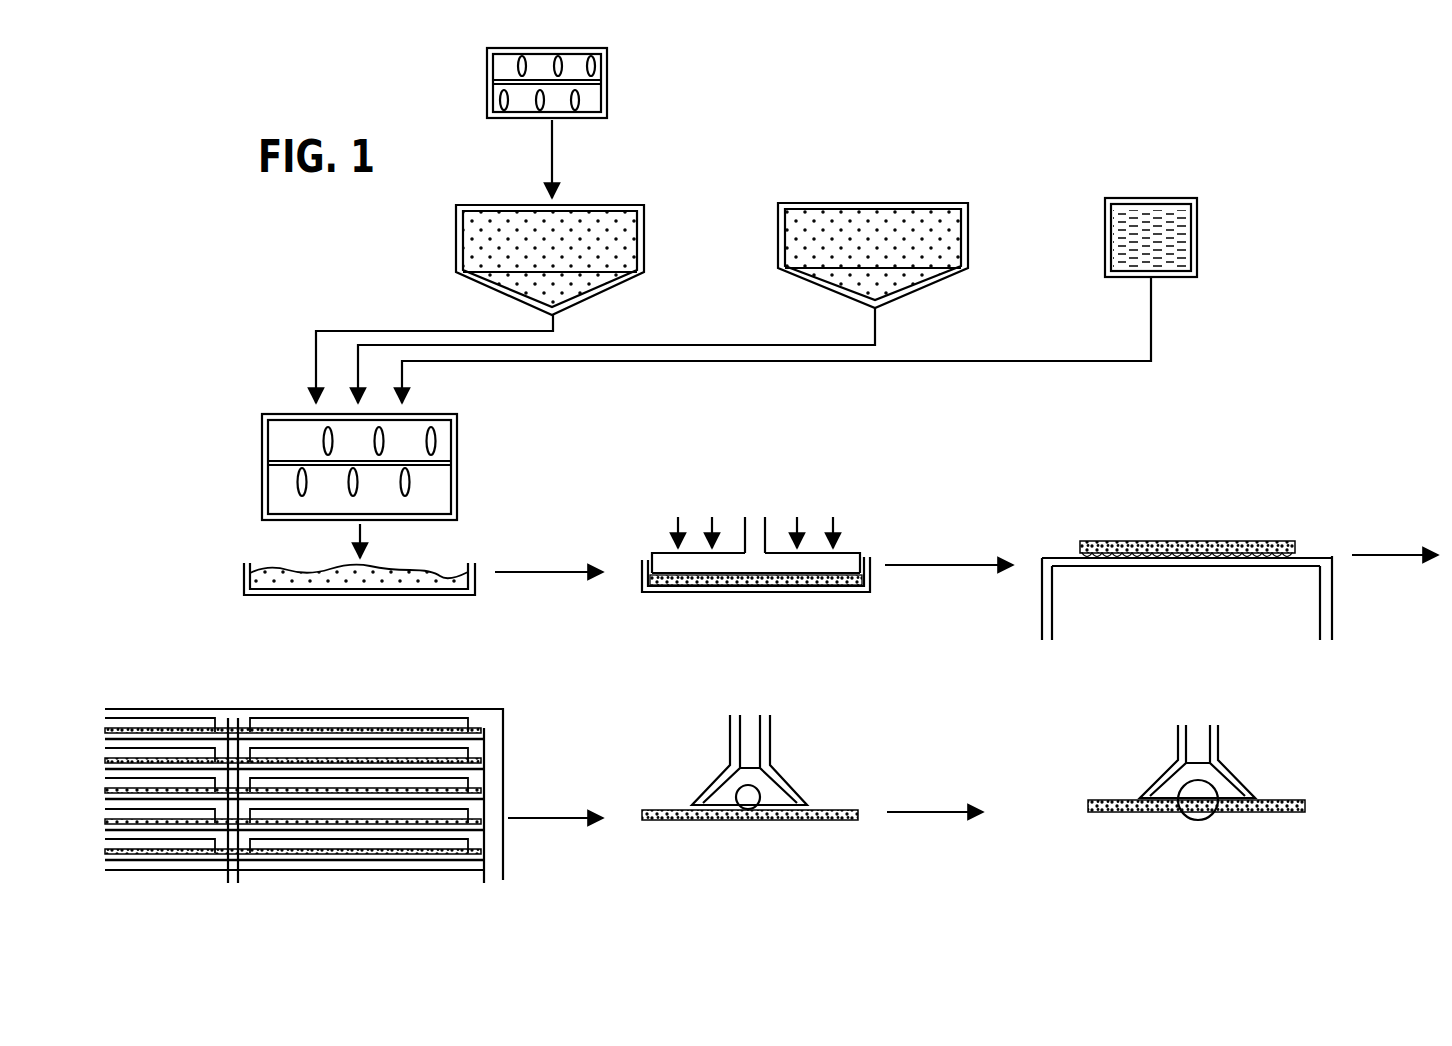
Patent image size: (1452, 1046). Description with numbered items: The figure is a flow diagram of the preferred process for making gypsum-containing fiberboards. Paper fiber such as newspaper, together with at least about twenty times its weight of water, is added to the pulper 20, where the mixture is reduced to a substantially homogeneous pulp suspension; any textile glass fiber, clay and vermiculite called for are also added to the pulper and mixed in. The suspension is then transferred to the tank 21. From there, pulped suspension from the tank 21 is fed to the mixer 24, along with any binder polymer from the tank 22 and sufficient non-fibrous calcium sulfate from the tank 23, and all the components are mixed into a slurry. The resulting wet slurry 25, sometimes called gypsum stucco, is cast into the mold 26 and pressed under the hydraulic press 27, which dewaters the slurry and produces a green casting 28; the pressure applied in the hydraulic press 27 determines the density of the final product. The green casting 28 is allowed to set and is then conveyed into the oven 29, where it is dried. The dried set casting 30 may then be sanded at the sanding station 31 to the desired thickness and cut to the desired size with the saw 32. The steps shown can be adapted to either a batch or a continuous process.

The pulper 20 is at (612, 76).
The tank 21 is at (646, 232).
The tank 22 is at (970, 228).
The tank 23 is at (1198, 230).
The mixer 24 is at (459, 440).
The wet slurry 25 is at (430, 576).
The mold 26 is at (458, 597).
The hydraulic press 27 is at (853, 551).
The green casting 28 is at (815, 586).
The oven 29 is at (488, 704).
The dried set casting 30 is at (856, 810).
The sanding station 31 is at (748, 797).
The saw 32 is at (1198, 792).